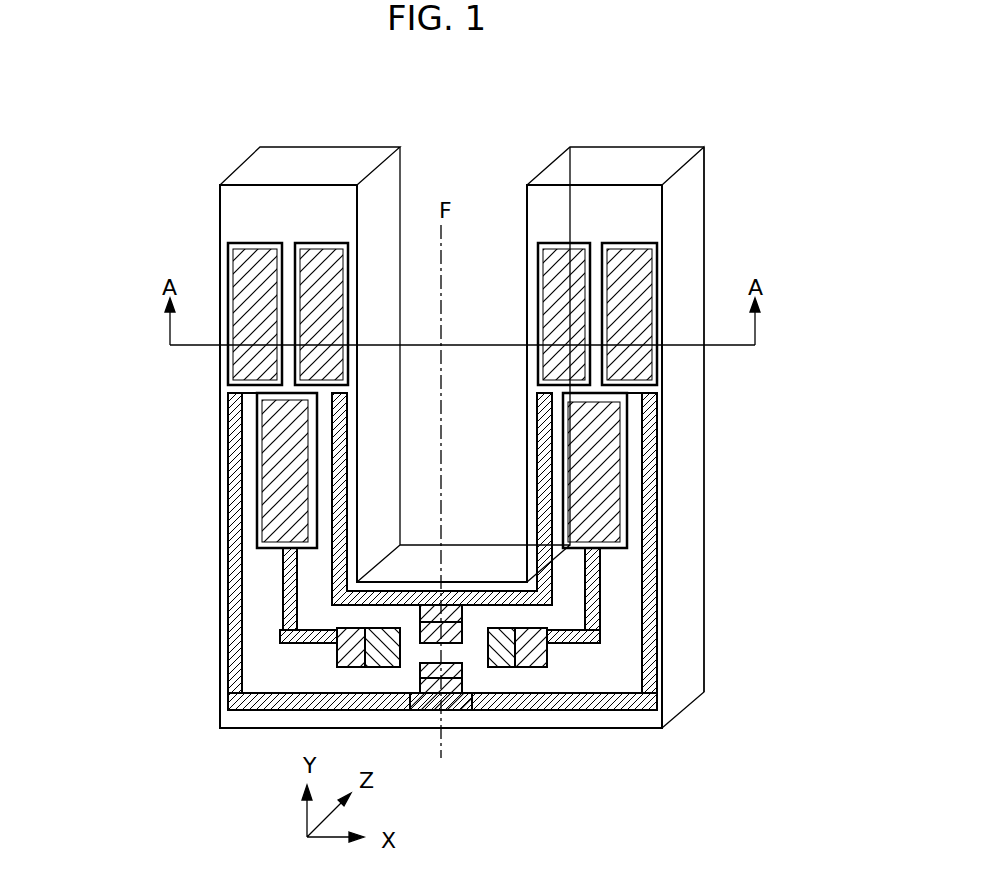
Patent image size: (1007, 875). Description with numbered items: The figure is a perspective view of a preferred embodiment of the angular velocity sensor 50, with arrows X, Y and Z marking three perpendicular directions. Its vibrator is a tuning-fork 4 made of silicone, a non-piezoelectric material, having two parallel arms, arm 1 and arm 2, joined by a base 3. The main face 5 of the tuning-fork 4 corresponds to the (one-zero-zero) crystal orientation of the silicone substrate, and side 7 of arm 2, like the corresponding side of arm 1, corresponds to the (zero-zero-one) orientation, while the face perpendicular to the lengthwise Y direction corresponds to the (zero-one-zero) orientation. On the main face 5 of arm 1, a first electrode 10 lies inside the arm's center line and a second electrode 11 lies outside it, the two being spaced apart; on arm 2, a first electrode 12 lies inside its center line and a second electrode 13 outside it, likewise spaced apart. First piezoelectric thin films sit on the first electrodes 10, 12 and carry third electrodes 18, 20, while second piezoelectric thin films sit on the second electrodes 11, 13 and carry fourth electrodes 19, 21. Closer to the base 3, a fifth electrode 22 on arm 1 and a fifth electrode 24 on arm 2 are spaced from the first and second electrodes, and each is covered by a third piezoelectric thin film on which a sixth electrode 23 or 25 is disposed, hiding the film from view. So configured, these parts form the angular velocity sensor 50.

The arm 1 is at (247, 175).
The arm 2 is at (652, 157).
The base 3 is at (555, 718).
The tuning-fork 4 is at (715, 120).
The main face 5 is at (540, 202).
The side 7 is at (693, 176).
The first electrode 10 is at (320, 243).
The second electrode 11 is at (265, 243).
The first electrode 12 is at (548, 243).
The second electrode 13 is at (627, 243).
The third electrode 18 is at (298, 243).
The fourth electrode 19 is at (240, 262).
The third electrode 20 is at (568, 280).
The fourth electrode 21 is at (630, 283).
The fifth electrode 22 is at (243, 397).
The sixth electrode 23 is at (268, 440).
The fifth electrode 24 is at (627, 402).
The sixth electrode 25 is at (597, 455).
The angular velocity sensor 50 is at (523, 100).